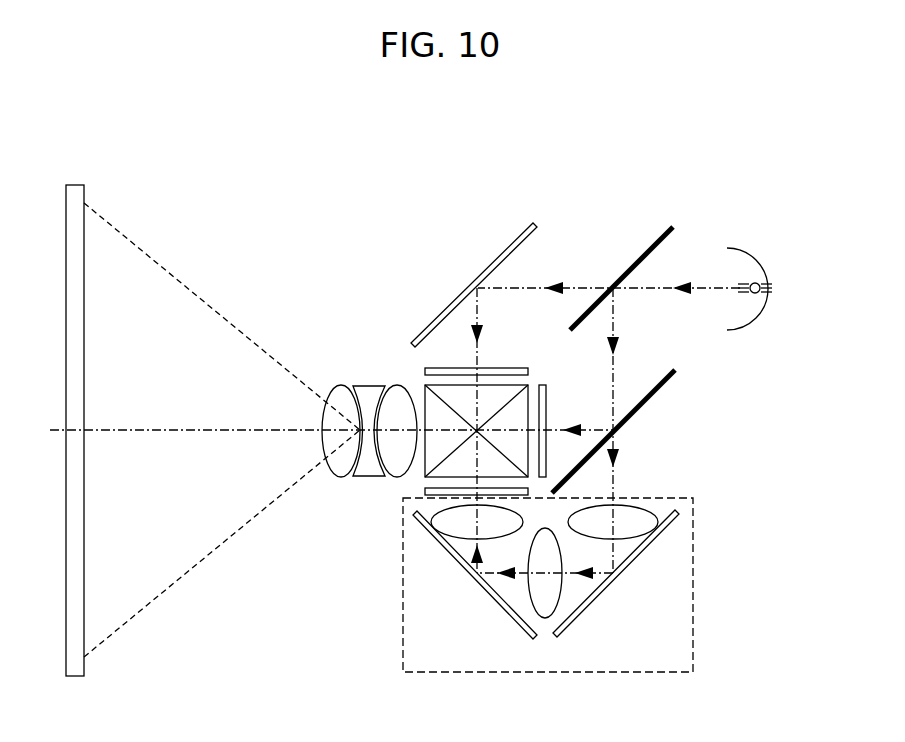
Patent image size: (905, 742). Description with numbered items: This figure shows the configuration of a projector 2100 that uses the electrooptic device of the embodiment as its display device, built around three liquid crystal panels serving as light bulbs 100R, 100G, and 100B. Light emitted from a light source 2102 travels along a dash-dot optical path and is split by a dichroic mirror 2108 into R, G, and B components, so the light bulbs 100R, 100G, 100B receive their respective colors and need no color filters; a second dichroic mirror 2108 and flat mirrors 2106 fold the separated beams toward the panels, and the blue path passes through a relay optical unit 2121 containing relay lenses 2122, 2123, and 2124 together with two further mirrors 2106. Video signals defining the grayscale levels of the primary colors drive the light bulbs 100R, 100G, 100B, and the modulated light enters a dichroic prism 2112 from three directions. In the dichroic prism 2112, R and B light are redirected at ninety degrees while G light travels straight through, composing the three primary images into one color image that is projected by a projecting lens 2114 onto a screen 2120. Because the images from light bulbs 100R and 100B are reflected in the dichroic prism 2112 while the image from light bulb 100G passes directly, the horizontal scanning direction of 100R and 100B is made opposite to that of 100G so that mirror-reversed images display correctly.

The projector 2100 is at (618, 164).
The light source 2102 is at (755, 283).
The mirror 2106 is at (510, 253).
The dichroic mirror 2108 is at (645, 257).
The dichroic prism 2112 is at (413, 340).
The projecting lens 2114 is at (415, 376).
The light bulb 100R is at (453, 367).
The light bulb 100G is at (577, 381).
The light bulb 100B is at (425, 490).
The screen 2120 is at (84, 662).
The relay optical system 2121 is at (694, 540).
The relay lens 2122 is at (633, 533).
The relay lens 2123 is at (554, 606).
The relay lens 2124 is at (455, 529).